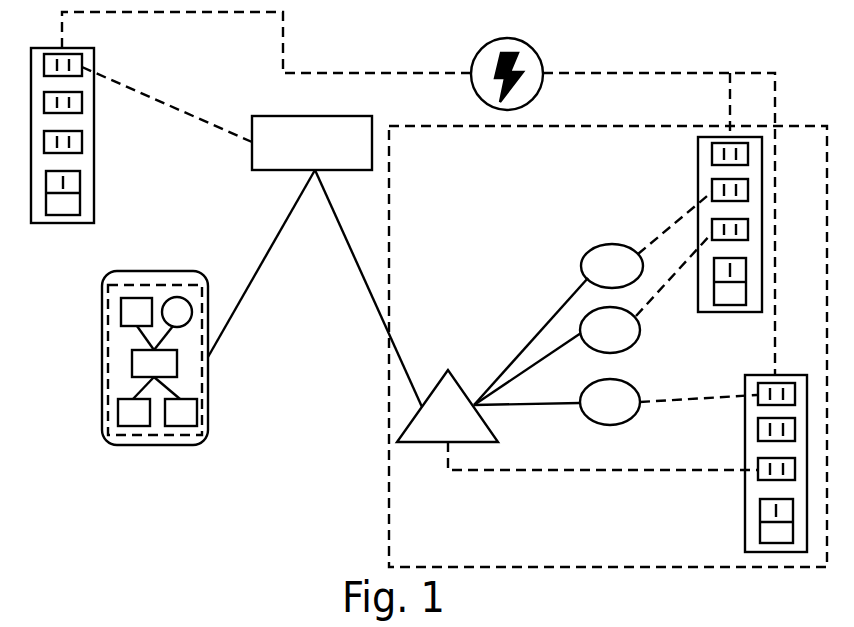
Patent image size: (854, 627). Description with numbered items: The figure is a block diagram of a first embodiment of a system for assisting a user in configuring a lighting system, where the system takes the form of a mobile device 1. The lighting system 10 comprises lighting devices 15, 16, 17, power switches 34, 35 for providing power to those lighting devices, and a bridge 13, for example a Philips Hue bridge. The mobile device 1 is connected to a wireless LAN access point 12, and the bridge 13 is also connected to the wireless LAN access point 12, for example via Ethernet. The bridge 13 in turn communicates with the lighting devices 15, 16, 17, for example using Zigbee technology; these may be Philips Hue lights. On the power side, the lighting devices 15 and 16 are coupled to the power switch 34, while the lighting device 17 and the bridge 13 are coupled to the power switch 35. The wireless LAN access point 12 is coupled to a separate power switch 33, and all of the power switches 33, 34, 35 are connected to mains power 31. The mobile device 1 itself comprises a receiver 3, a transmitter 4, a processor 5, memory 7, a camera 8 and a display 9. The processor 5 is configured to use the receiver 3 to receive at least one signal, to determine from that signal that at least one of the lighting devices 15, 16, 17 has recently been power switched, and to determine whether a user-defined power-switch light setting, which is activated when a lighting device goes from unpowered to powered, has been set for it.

The mobile device 1 is at (125, 358).
The receiver 3 is at (134, 412).
The transmitter 4 is at (181, 412).
The processor 5 is at (154, 363).
The memory 7 is at (136, 312).
The camera 8 is at (177, 312).
The display 9 is at (110, 300).
The lighting system 10 is at (407, 167).
The wireless LAN access point 12 is at (312, 143).
The bridge 13 is at (447, 406).
The lighting device 15 is at (612, 266).
The lighting device 16 is at (610, 330).
The lighting device 17 is at (610, 402).
The mains power 31 is at (532, 48).
The power switch 33 is at (95, 197).
The power switch 34 is at (698, 153).
The power switch 35 is at (745, 530).